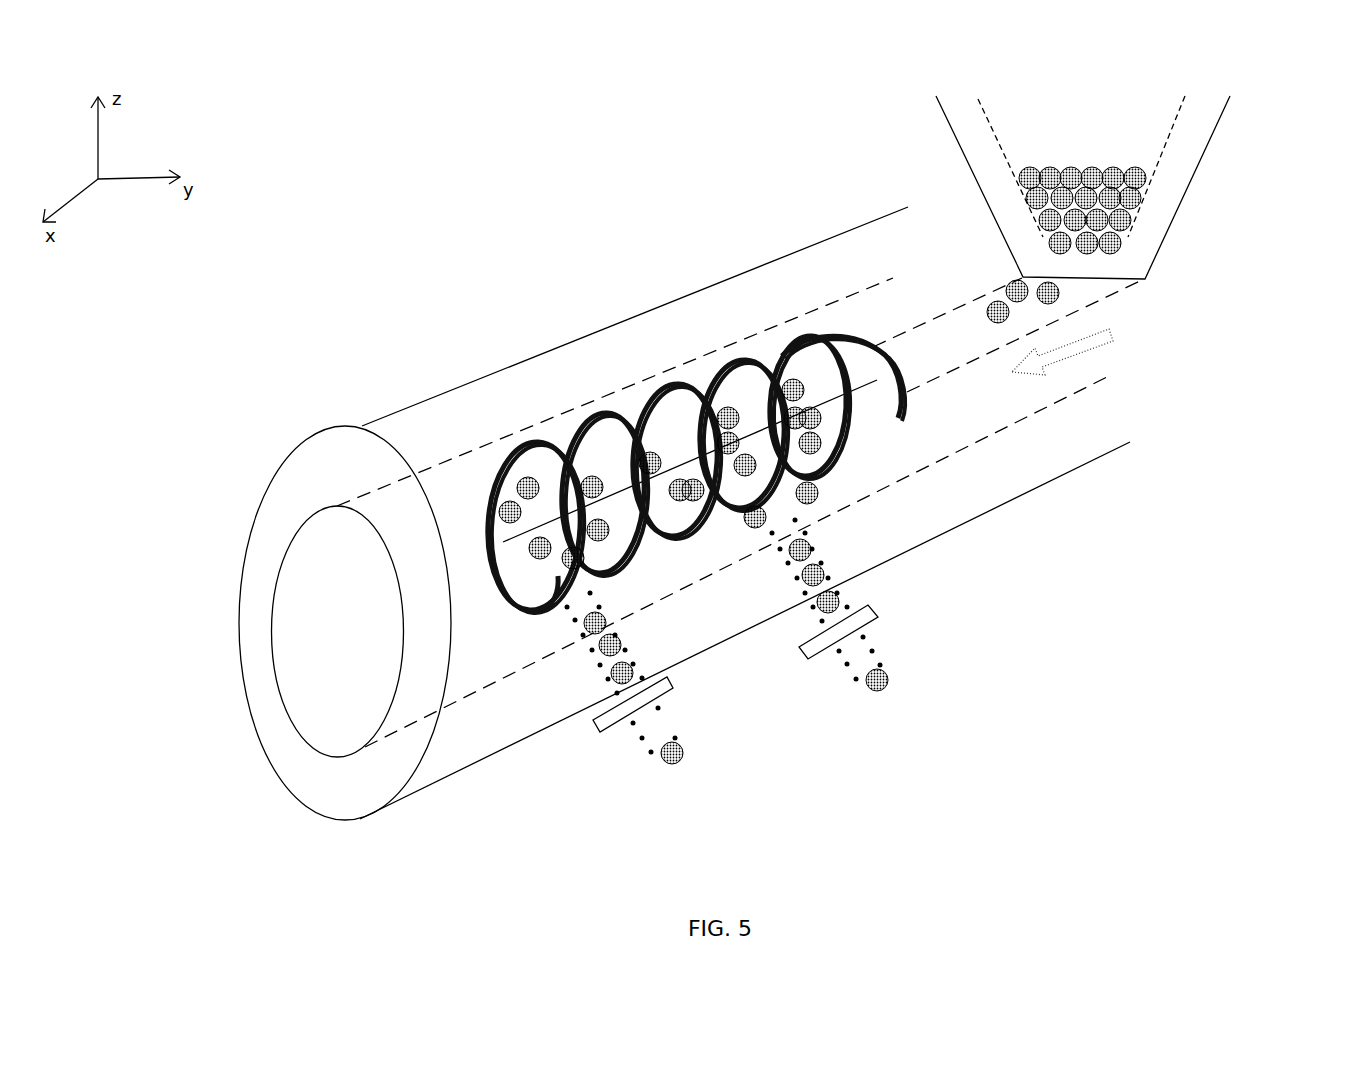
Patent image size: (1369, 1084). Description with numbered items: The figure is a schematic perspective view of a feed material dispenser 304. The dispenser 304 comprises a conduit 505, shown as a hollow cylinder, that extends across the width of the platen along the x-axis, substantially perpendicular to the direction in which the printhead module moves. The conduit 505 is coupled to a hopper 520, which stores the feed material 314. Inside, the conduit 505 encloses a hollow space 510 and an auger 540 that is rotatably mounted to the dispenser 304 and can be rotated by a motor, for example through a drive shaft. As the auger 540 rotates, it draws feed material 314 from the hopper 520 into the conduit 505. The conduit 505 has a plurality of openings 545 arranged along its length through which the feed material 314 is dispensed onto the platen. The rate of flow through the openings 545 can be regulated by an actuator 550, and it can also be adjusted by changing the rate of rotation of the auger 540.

The feed material dispenser 304 is at (690, 510).
The conduit 505 is at (442, 755).
The hollow space 510 is at (475, 468).
The auger 540 is at (560, 447).
The actuator 550 is at (875, 609).
The openings 545 is at (660, 724).
The hopper 520 is at (1242, 122).
The feed material 314 is at (1137, 180).